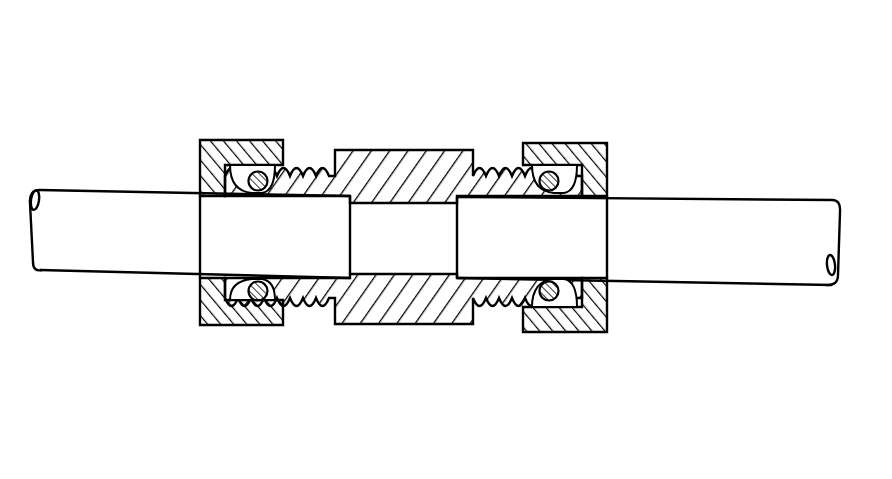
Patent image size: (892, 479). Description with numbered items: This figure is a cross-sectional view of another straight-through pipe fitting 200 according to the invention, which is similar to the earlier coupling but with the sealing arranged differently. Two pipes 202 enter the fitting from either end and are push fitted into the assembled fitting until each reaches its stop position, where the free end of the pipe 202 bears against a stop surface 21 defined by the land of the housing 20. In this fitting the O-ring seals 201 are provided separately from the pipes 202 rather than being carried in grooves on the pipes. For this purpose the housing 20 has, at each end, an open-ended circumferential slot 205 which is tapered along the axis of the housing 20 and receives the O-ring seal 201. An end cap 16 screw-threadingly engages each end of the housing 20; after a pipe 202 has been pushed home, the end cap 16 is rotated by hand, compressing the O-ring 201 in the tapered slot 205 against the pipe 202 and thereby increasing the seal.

The fitting 200 is at (477, 87).
The cap 16 is at (248, 141).
The O-ring seal 201 is at (568, 190).
The pipe 202 is at (103, 247).
The circumferential slot 205 is at (266, 300).
The housing 20 is at (402, 306).
The stop surface 21 is at (357, 286).